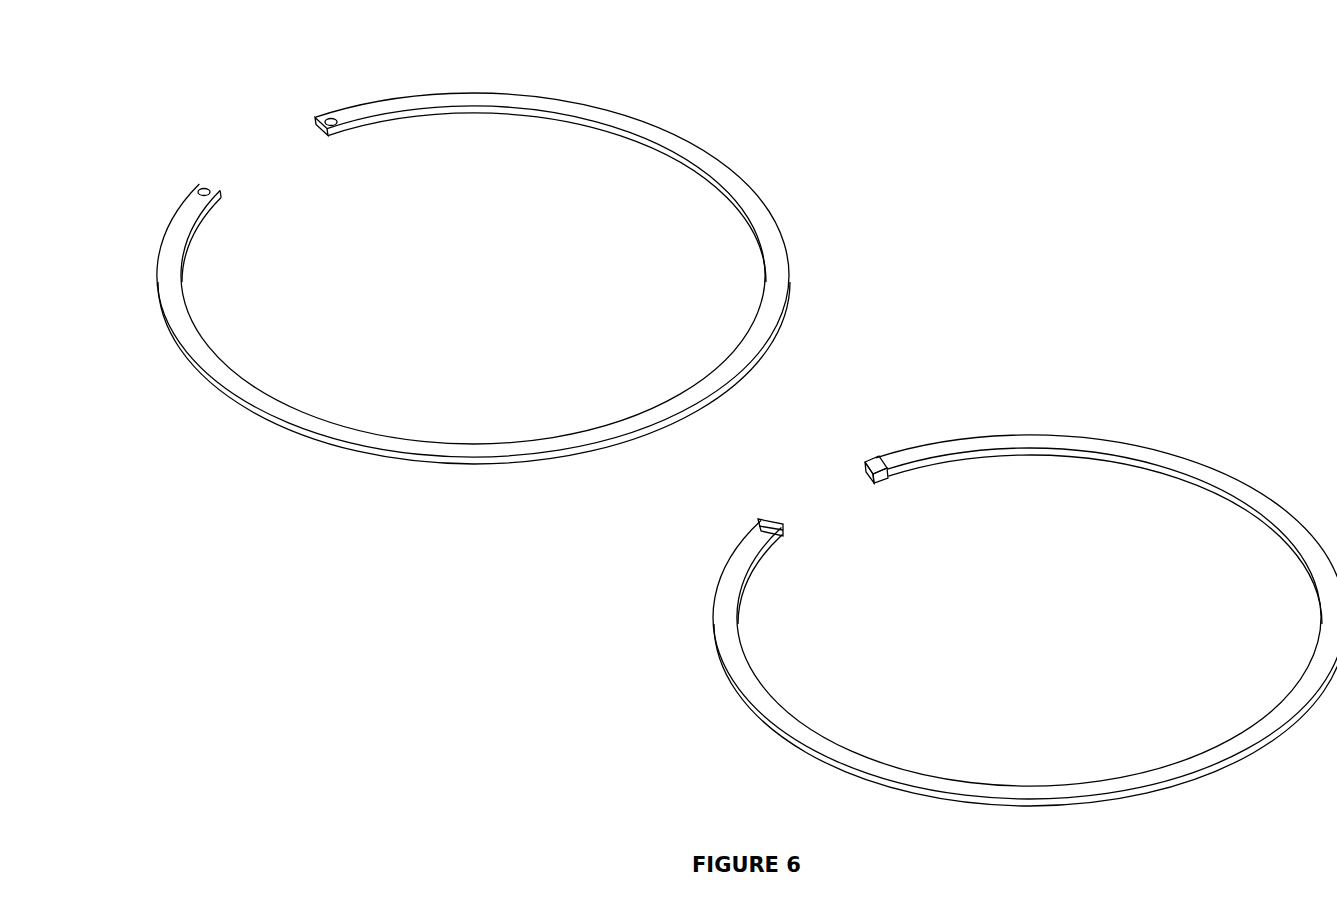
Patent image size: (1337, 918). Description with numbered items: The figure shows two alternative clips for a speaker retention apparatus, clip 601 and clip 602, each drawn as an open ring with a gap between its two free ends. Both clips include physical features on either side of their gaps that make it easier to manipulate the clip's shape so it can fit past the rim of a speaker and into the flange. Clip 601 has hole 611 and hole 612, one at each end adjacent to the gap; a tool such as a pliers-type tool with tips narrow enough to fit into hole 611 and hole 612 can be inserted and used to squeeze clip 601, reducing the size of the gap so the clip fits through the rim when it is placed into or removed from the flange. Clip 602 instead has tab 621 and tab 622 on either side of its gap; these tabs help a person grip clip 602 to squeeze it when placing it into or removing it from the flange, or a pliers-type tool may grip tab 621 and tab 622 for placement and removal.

The clip 601 is at (201, 84).
The hole 611 is at (199, 189).
The hole 612 is at (328, 117).
The clip 602 is at (1270, 437).
The tab 621 is at (758, 519).
The tab 622 is at (867, 460).